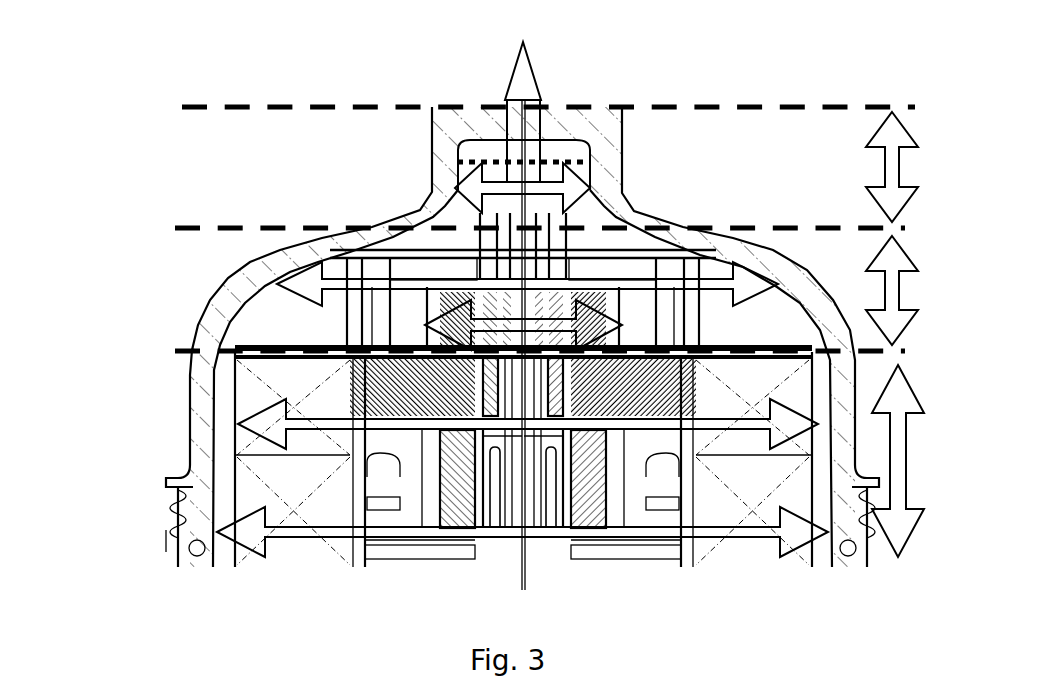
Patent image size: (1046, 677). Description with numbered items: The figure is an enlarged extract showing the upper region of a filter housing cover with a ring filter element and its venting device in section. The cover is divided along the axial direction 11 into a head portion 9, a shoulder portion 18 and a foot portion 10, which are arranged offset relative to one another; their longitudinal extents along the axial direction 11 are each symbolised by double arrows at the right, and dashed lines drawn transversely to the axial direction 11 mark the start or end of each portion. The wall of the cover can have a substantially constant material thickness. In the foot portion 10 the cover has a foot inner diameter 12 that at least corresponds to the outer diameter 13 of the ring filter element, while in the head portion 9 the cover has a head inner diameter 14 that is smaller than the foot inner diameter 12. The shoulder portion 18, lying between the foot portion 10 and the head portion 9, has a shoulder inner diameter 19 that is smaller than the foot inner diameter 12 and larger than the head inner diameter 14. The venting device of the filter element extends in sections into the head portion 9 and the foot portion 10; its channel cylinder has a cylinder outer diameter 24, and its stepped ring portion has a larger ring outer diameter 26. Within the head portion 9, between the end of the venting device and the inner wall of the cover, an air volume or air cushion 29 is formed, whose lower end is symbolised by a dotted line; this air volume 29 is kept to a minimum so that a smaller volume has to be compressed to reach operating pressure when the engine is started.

The axial direction 11 is at (520, 83).
The air volume 29 is at (490, 152).
The head inner diameter 14 is at (475, 190).
The cylinder outer diameter 24 is at (340, 250).
The shoulder inner diameter 19 is at (470, 268).
The ring outer diameter 26 is at (425, 328).
The outer diameter 13 is at (270, 426).
The foot inner diameter 12 is at (250, 533).
The head portion 9 is at (895, 190).
The shoulder portion 18 is at (895, 303).
The foot portion 10 is at (895, 490).